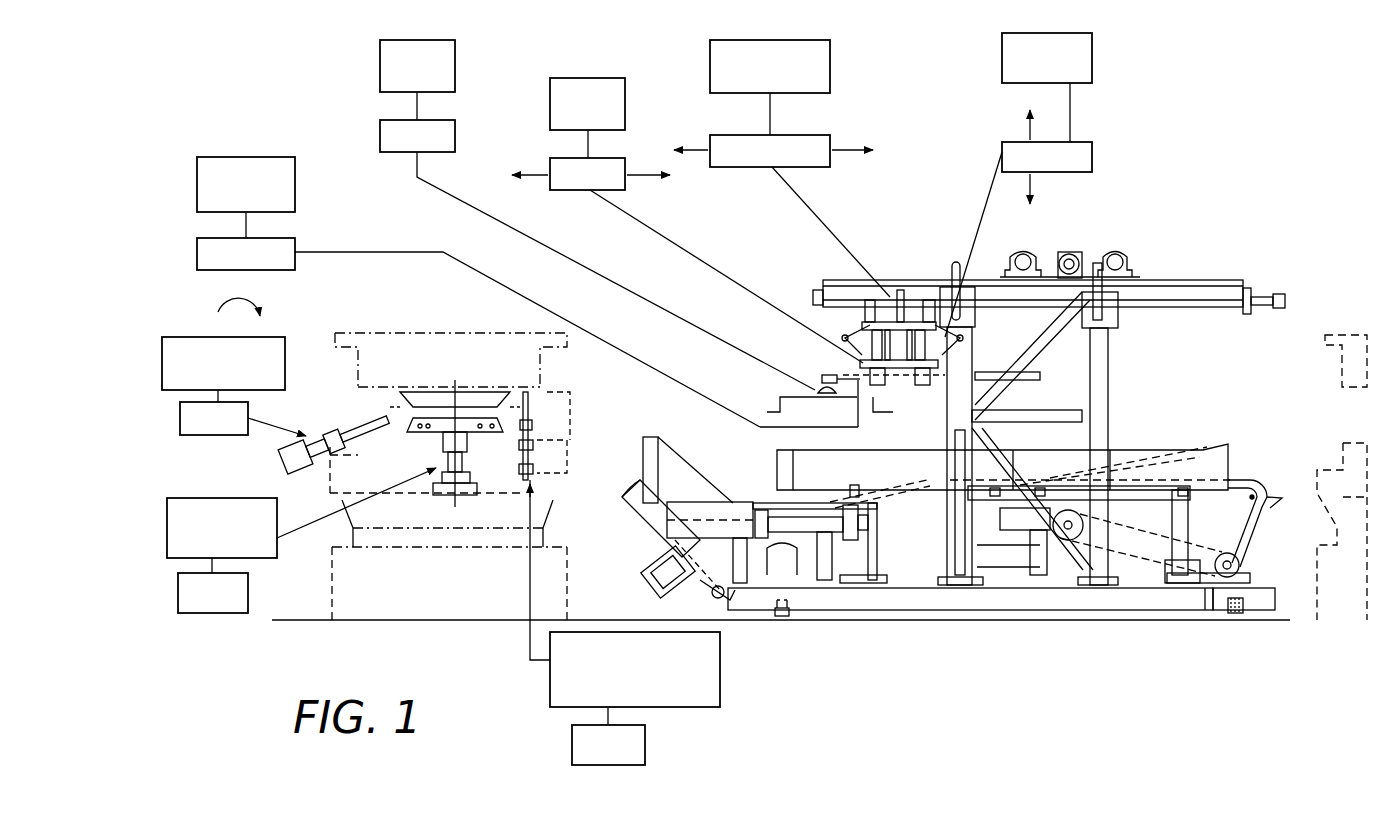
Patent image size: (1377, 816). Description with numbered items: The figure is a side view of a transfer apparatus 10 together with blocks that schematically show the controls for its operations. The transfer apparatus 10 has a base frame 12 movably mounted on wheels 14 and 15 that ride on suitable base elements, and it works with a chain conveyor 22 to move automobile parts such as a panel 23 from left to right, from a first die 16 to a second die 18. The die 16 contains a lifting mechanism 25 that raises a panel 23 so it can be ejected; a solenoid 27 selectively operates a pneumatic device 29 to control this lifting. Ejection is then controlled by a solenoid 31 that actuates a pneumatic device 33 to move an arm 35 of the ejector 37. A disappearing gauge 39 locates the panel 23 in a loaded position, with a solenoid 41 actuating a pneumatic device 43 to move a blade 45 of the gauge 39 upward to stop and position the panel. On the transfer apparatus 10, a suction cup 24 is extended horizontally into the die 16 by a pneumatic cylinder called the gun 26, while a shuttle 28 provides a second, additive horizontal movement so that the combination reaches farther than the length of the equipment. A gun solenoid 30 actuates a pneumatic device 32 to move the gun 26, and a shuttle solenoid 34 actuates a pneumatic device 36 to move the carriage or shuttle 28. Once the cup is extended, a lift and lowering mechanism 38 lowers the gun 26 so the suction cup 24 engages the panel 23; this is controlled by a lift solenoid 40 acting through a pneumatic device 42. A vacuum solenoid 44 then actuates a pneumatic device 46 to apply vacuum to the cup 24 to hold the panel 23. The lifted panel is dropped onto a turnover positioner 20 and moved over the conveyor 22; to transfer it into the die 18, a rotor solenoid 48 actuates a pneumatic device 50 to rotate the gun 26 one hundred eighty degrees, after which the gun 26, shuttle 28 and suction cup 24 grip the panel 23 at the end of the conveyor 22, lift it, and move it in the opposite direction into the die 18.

The transfer apparatus 10 is at (1132, 240).
The base frame 12 is at (1057, 600).
The wheel 14 is at (1237, 616).
The wheel 15 is at (783, 614).
The first die 16 is at (552, 408).
The second die 18 is at (1334, 457).
The turnover positioner 20 is at (631, 479).
The chain conveyor 22 is at (879, 447).
The panel 23 is at (527, 420).
The suction cup 24 is at (817, 388).
The lifting mechanism 25 is at (470, 467).
The gun 26 is at (1040, 374).
The solenoid 27 is at (210, 613).
The shuttle 28 is at (1150, 272).
The pneumatic device 29 is at (215, 498).
The gun solenoid 30 is at (600, 78).
The solenoid 31 is at (285, 352).
The pneumatic device 32 is at (625, 170).
The pneumatic device 33 is at (248, 415).
The shuttle solenoid 34 is at (830, 66).
The arm 35 is at (345, 438).
The pneumatic device 36 is at (830, 150).
The ejector 37 is at (280, 463).
The lift and lowering mechanism 38 is at (830, 330).
The disappearing gauge 39 is at (544, 454).
The lift solenoid 40 is at (1092, 56).
The solenoid 41 is at (720, 670).
The pneumatic device 42 is at (1092, 158).
The pneumatic device 43 is at (645, 742).
The vacuum solenoid 44 is at (455, 68).
The blade 45 is at (540, 430).
The pneumatic device 46 is at (455, 144).
The rotor solenoid 48 is at (295, 186).
The pneumatic device 50 is at (295, 240).